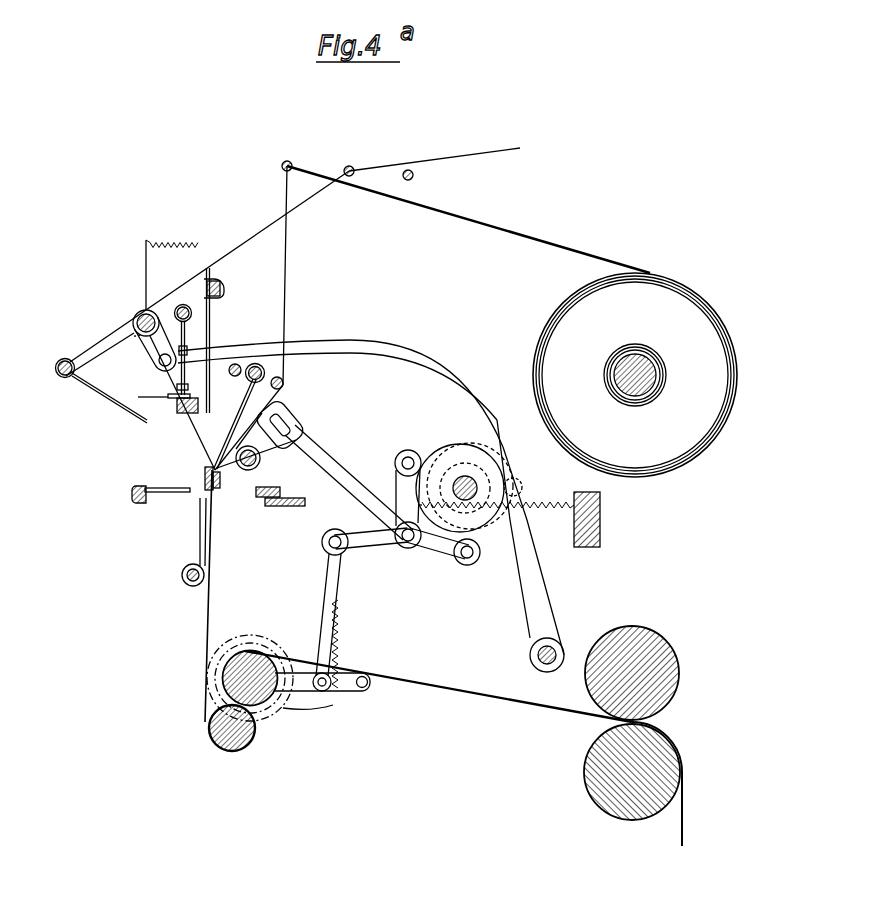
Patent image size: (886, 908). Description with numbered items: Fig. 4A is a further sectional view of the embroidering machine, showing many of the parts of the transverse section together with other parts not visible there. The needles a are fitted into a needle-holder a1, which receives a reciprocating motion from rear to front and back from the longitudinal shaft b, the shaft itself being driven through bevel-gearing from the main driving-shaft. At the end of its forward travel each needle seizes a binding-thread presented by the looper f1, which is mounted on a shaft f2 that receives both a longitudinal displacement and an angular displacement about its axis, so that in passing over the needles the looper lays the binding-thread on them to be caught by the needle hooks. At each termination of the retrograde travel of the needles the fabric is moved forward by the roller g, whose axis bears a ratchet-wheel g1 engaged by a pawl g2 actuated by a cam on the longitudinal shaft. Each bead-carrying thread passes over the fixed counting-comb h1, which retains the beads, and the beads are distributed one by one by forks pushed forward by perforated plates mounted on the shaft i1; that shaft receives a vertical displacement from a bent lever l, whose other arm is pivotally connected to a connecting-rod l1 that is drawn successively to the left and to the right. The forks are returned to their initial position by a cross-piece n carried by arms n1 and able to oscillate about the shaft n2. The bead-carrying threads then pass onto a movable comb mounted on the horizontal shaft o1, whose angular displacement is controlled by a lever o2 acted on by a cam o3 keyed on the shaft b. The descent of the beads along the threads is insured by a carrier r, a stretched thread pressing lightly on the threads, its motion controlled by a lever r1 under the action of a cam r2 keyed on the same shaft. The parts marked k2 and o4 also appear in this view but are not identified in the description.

The carrier r is at (140, 420).
The counting-comb h1 is at (178, 416).
The shaft n2 is at (186, 301).
The arms n1 is at (187, 347).
The cross-piece n is at (177, 389).
The plate k2 is at (165, 399).
The shaft i1 is at (221, 283).
The bent lever l is at (256, 384).
The connecting-rod l1 is at (239, 408).
The lever r1 is at (355, 343).
The cam r2 is at (470, 446).
The longitudinal shaft b is at (465, 476).
The spring o4 is at (446, 462).
The cam o3 is at (479, 546).
The lever o2 is at (340, 473).
The horizontal shaft o1 is at (262, 456).
The looper f1 is at (203, 472).
The shaft f2 is at (143, 500).
The needles a is at (256, 490).
The needle-holder a1 is at (283, 496).
The roller g is at (256, 660).
The ratchet-wheel g1 is at (272, 725).
The pawl g2 is at (331, 700).